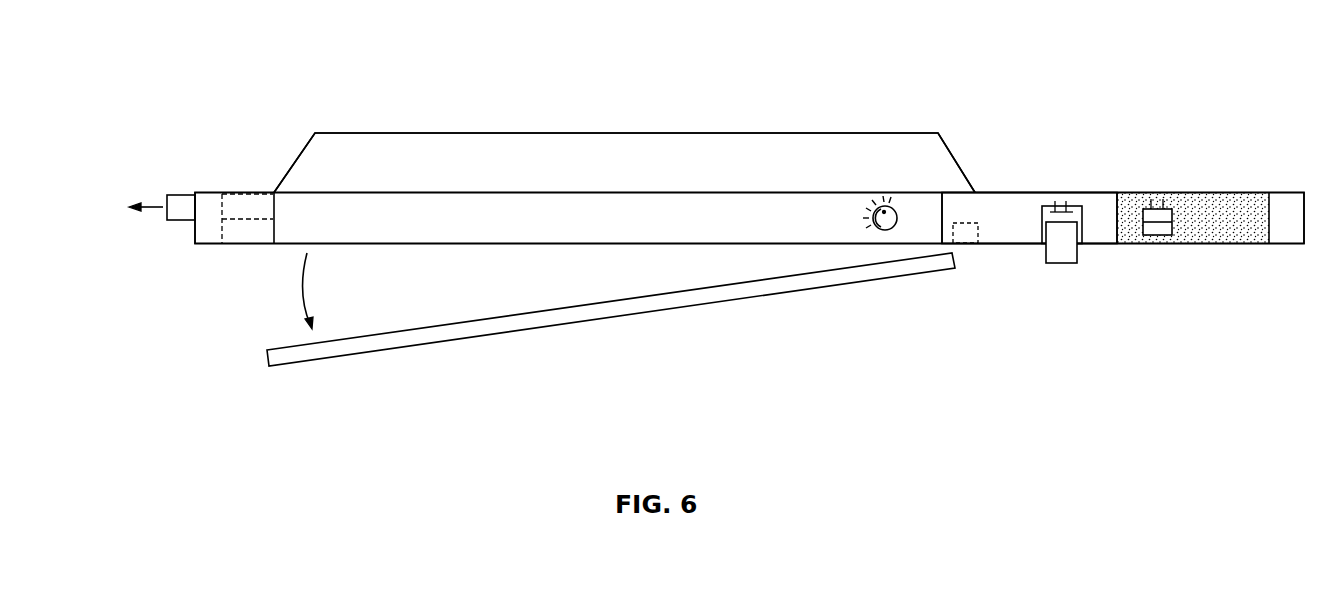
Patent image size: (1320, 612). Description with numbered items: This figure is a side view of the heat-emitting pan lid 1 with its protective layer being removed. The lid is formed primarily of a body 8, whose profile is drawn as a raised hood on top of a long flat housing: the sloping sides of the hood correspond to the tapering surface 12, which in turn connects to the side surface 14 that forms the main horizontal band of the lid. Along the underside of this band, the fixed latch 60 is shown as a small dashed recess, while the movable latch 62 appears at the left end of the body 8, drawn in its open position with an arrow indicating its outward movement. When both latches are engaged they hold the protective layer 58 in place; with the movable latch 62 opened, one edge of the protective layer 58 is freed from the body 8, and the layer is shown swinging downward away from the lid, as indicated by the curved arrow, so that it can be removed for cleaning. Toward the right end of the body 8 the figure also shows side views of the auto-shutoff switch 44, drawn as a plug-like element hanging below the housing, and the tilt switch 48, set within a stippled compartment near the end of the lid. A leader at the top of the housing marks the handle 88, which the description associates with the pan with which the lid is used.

The heat-emitting pan lid 1 is at (1189, 56).
The body 8 is at (355, 134).
The tapering surface 12 is at (639, 174).
The side surface 14 is at (620, 228).
The auto-shutoff switch 44 is at (1058, 245).
The tilt switch 48 is at (1160, 228).
The protective layer 58 is at (643, 307).
The fixed latch 60 is at (968, 239).
The movable latch 62 is at (177, 202).
The handle 88 is at (1010, 191).